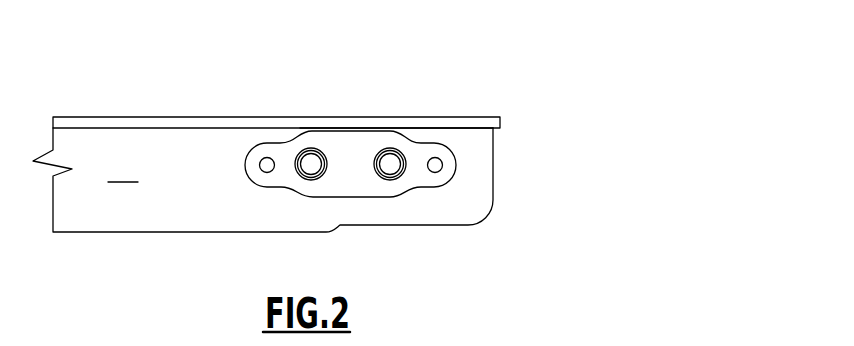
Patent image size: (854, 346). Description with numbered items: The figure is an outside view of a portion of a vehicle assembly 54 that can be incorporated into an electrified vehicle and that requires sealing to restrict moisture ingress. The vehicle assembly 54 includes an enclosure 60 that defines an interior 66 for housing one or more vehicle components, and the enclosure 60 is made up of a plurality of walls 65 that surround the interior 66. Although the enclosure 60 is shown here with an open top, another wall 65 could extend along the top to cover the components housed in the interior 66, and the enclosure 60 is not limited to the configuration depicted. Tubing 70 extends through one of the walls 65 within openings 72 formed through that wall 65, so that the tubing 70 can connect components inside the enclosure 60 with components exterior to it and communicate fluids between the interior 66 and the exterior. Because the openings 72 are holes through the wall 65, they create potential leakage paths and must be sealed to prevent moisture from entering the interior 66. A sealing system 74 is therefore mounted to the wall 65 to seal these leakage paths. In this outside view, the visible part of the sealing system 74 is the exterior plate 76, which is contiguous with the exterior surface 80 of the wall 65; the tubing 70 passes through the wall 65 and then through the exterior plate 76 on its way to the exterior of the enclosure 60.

The vehicle assembly 54 is at (348, 142).
The enclosure 60 is at (283, 159).
The wall 65 is at (263, 199).
The interior 66 is at (210, 103).
The tubing 70 is at (311, 180).
The openings 72 is at (358, 175).
The sealing system 74 is at (414, 118).
The exterior plate 76 is at (342, 173).
The exterior surface 80 is at (123, 169).